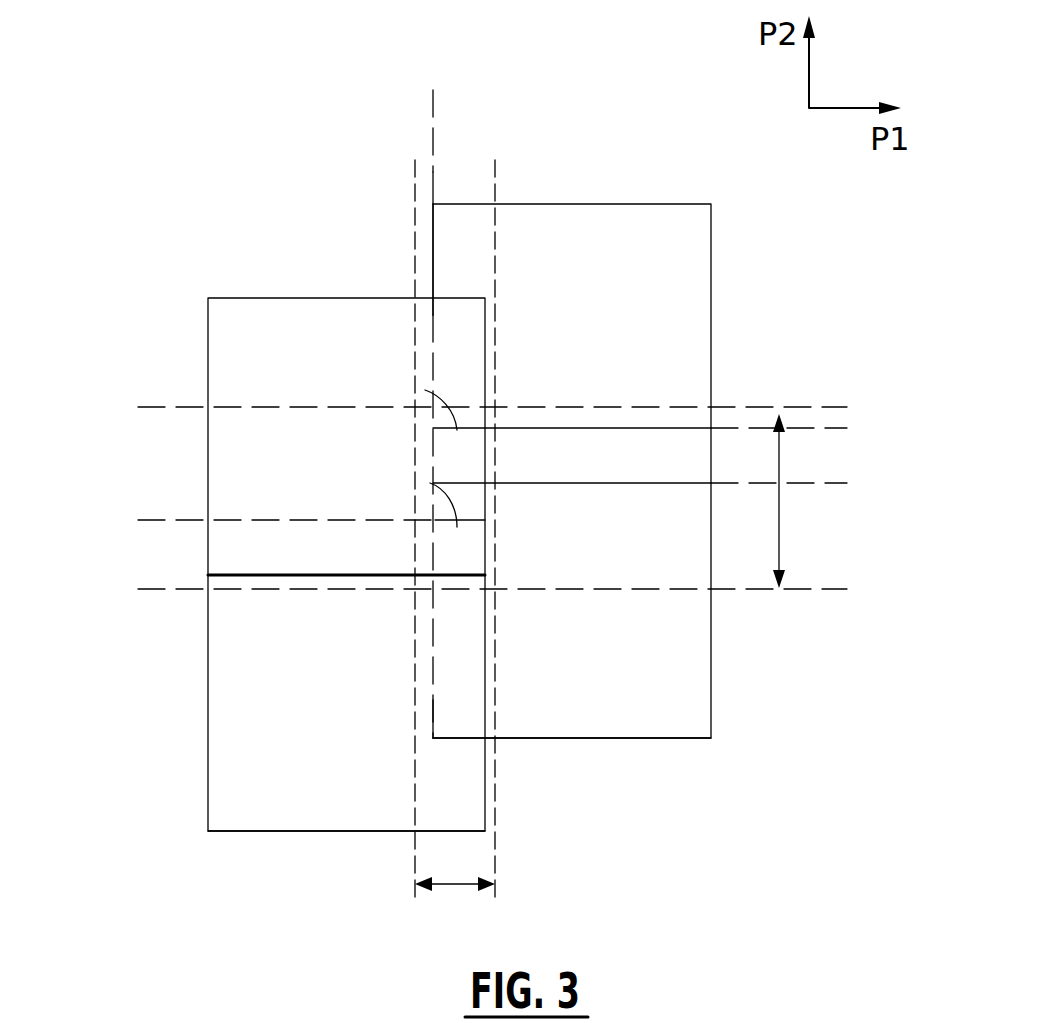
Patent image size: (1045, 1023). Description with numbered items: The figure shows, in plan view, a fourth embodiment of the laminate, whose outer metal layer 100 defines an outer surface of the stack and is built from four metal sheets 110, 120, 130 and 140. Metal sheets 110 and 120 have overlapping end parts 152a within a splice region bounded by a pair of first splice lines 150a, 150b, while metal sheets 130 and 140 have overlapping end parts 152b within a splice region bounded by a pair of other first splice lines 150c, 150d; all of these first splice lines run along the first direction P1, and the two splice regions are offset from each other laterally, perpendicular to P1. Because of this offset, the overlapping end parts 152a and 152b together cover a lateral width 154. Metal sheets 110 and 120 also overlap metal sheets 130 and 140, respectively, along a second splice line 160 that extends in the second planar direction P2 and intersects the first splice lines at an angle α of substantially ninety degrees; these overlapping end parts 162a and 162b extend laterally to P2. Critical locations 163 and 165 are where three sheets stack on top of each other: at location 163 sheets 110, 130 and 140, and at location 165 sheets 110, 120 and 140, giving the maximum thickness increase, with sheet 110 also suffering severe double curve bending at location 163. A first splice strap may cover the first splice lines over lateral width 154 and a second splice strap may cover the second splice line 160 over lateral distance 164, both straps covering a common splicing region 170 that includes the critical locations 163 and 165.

The outer metal layer 100 is at (180, 174).
The metal sheet 110 is at (297, 315).
The metal sheet 120 is at (298, 808).
The metal sheet 130 is at (605, 218).
The metal sheet 140 is at (646, 715).
The first splice line 150a is at (180, 520).
The first splice line 150b is at (167, 591).
The other first splice line 150c is at (832, 428).
The other first splice line 150d is at (813, 484).
The overlapping end parts 152a is at (232, 545).
The overlapping end parts 152b is at (680, 458).
The lateral width 154 is at (779, 468).
The second splice line 160 is at (437, 115).
The overlapping end parts 162a is at (453, 320).
The overlapping end parts 162b is at (460, 717).
The critical location 163 is at (450, 455).
The lateral distance 164 is at (458, 888).
The critical location 165 is at (462, 554).
The common splicing region 170 is at (402, 497).